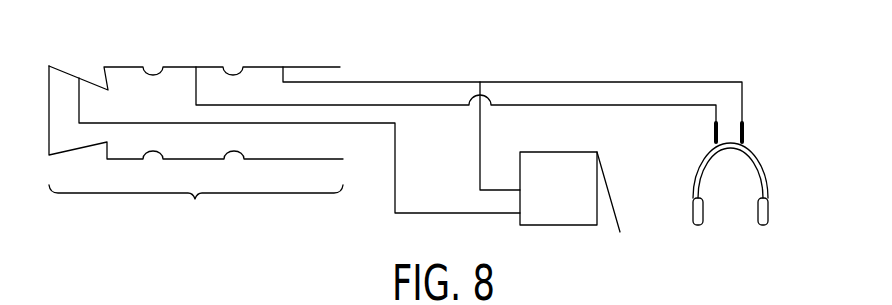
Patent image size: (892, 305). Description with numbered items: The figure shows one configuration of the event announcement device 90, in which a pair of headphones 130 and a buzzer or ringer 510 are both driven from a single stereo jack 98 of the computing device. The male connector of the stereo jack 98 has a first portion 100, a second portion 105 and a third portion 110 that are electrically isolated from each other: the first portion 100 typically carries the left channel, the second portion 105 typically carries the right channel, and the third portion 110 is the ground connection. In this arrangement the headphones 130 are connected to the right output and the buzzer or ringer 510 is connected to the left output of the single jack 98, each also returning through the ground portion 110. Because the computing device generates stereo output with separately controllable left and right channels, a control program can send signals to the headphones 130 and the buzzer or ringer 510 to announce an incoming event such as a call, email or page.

The first portion 100 is at (79, 80).
The single stereo jack 98 is at (196, 208).
The second portion 105 is at (192, 67).
The third portion 110 is at (284, 67).
The event announcement device 90 is at (503, 53).
The buzzer or ringer 510 is at (573, 152).
The pair of headphones 130 is at (755, 163).